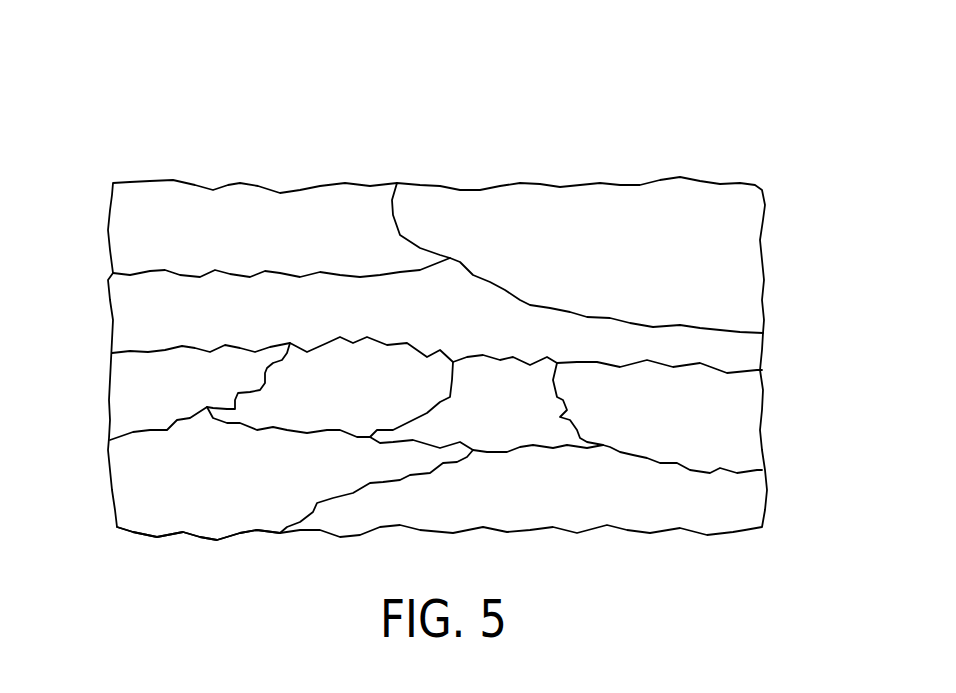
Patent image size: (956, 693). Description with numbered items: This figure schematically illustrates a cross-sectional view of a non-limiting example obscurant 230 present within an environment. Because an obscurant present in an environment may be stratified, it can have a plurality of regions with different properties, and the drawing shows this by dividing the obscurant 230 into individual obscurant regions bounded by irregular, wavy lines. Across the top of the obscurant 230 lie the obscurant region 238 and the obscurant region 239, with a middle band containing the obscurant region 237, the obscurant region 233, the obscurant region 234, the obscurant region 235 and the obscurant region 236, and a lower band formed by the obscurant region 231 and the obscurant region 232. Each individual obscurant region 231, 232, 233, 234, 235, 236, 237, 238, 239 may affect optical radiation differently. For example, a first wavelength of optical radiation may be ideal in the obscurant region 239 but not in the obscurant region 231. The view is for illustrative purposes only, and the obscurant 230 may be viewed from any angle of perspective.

The obscurant 230 is at (163, 133).
The obscurant region 231 is at (210, 503).
The obscurant region 232 is at (587, 497).
The obscurant region 233 is at (140, 388).
The obscurant region 234 is at (347, 370).
The obscurant region 235 is at (498, 400).
The obscurant region 236 is at (725, 422).
The obscurant region 237 is at (140, 313).
The obscurant region 238 is at (247, 213).
The obscurant region 239 is at (610, 212).